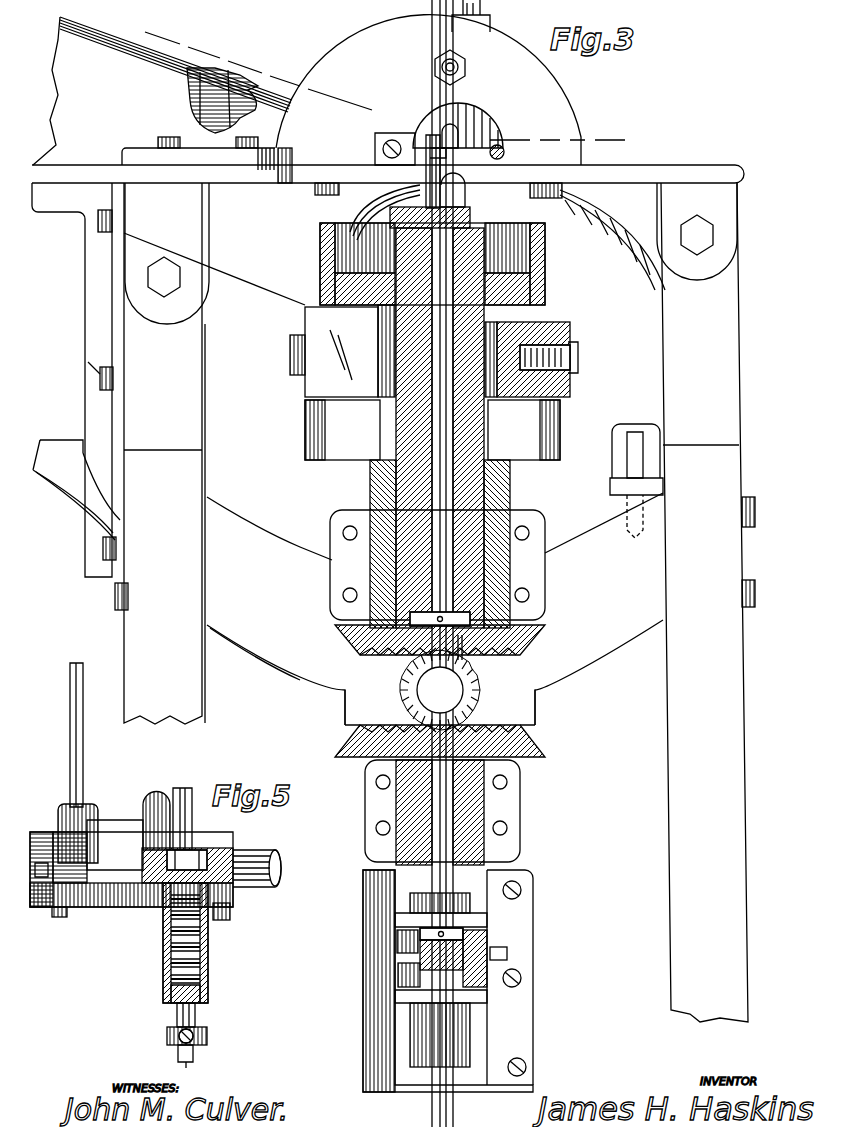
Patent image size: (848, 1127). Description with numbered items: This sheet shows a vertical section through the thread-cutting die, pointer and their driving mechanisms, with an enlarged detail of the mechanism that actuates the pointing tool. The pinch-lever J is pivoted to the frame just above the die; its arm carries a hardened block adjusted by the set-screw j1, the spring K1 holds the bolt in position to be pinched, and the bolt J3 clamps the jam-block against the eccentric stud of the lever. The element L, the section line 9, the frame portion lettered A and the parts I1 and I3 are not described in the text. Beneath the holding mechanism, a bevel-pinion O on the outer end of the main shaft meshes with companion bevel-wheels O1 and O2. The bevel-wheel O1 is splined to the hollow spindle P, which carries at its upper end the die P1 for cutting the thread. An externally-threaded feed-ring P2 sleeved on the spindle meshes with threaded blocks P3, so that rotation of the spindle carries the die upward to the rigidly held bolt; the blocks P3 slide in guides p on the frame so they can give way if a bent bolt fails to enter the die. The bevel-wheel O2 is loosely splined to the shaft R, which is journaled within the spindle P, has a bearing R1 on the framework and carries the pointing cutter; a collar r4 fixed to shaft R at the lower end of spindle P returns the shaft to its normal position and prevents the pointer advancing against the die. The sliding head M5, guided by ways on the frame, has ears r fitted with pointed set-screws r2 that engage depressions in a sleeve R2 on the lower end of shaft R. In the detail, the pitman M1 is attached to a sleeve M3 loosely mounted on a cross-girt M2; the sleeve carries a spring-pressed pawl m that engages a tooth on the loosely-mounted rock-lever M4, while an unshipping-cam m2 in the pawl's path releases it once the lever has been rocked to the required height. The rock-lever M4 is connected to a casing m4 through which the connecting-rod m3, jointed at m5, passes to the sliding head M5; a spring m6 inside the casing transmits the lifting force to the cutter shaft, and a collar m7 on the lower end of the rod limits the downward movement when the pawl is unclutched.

In FIG. 3, the lever L is at (202, 91).
In FIG. 3, the section line 9 is at (219, 58).
In FIG. 3, the pinch-lever J is at (419, 85).
In FIG. 3, the bolt J3 is at (456, 69).
In FIG. 3, the retaining-spring K1 is at (444, 150).
In FIG. 3, the set-screw j1 is at (504, 157).
In FIG. 3, the die P1 is at (464, 222).
In FIG. 3, the feed-ring P2 is at (380, 333).
In FIG. 3, the threaded blocks P3 is at (380, 388).
In FIG. 3, the guides p is at (302, 345).
In FIG. 3, the hollow spindle P is at (460, 492).
In FIG. 3, the frame A is at (393, 602).
In FIG. 3, the bracket slot I3 is at (622, 443).
In FIG. 3, the bracket flange I1 is at (636, 462).
In FIG. 3, the bevel-wheel O1 is at (336, 641).
In FIG. 3, the collar r4 is at (497, 653).
In FIG. 3, the bevel-pinion O is at (457, 690).
In FIG. 3, the bevel-wheel O2 is at (336, 735).
In FIG. 3, the bearing R1 is at (462, 803).
In FIG. 3, the shaft R is at (446, 888).
In FIG. 3, the sliding head M5 is at (478, 921).
In FIG. 3, the ears r is at (450, 965).
In FIG. 3, the pointed set-screws r2 is at (496, 952).
In FIG. 3, the sleeve R2 is at (397, 978).
In FIG. 5, the pitman M1 is at (70, 748).
In FIG. 5, the sleeve M3 is at (131, 863).
In FIG. 5, the spring-pressed pawl m is at (148, 820).
In FIG. 5, the connecting-rod m3 is at (183, 795).
In FIG. 5, the rock-lever M4 is at (225, 856).
In FIG. 5, the joint m5 is at (196, 856).
In FIG. 5, the cross-girt M2 is at (272, 862).
In FIG. 5, the unshipping-cam m2 is at (45, 915).
In FIG. 5, the spring m6 is at (167, 966).
In FIG. 5, the casing m4 is at (203, 972).
In FIG. 5, the collar m7 is at (205, 1038).